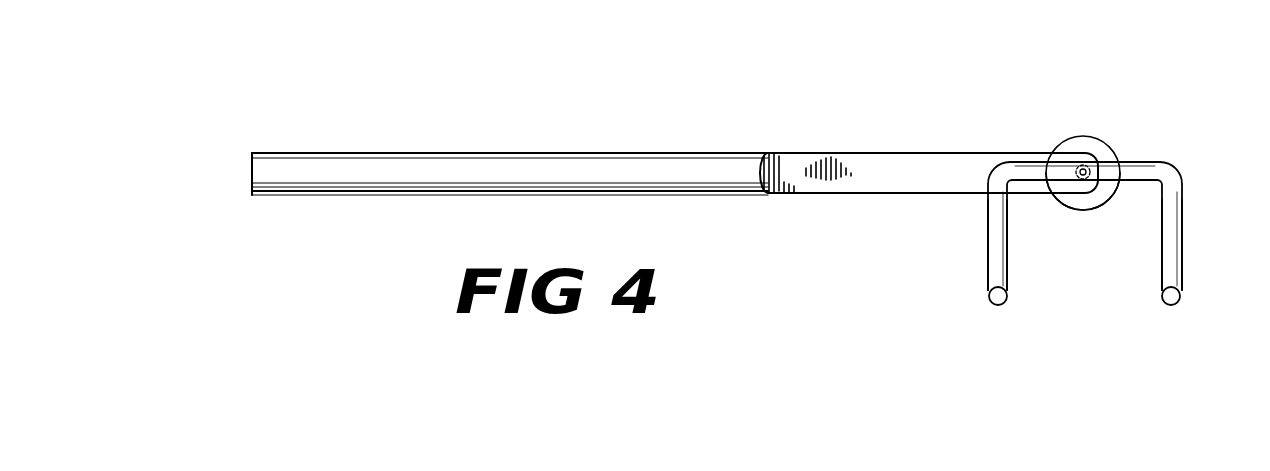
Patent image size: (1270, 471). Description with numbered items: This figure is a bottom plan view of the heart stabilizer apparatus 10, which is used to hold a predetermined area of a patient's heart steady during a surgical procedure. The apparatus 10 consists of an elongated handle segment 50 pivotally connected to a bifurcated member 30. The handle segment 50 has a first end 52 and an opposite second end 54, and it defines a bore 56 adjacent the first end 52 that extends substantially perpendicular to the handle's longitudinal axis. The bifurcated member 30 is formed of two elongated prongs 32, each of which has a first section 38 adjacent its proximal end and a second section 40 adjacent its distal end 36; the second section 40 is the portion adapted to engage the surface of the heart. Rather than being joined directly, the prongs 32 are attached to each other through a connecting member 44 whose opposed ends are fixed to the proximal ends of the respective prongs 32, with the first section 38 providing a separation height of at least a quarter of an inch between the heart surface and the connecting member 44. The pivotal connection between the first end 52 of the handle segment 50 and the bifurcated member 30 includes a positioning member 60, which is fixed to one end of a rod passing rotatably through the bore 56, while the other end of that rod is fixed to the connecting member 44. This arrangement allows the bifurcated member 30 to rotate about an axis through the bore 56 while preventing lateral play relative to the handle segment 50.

The apparatus 10 is at (853, 108).
The bifurcated member 30 is at (987, 230).
The prongs 32 is at (990, 277).
The distal end 36 is at (1002, 303).
The first section 38 is at (1027, 168).
The second section 40 is at (1008, 257).
The connecting member 44 is at (1052, 172).
The handle segment 50 is at (590, 152).
The first end 52 is at (1101, 155).
The second end 54 is at (253, 152).
The bore 56 is at (1084, 163).
The positioning member 60 is at (1097, 207).